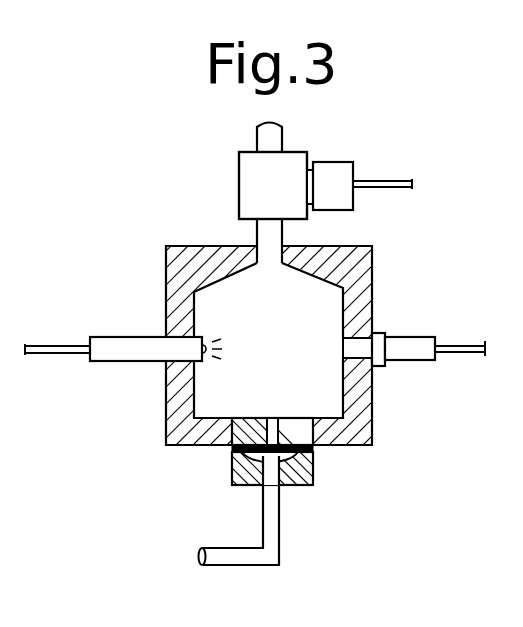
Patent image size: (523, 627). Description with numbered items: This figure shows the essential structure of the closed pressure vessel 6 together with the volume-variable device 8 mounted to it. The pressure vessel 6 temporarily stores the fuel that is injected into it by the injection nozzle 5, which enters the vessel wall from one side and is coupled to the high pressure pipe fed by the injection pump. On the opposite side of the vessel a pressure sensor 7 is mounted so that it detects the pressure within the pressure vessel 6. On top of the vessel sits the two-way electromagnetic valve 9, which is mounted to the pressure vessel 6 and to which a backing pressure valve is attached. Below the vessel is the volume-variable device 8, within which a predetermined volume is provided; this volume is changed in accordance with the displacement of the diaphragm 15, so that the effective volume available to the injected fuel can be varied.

The injection nozzle 5 is at (121, 337).
The pressure vessel 6 is at (167, 396).
The pressure sensor 7 is at (412, 357).
The volume-variable device 8 is at (261, 490).
The two-way electromagnetic valve 9 is at (239, 196).
The diaphragm 15 is at (232, 463).